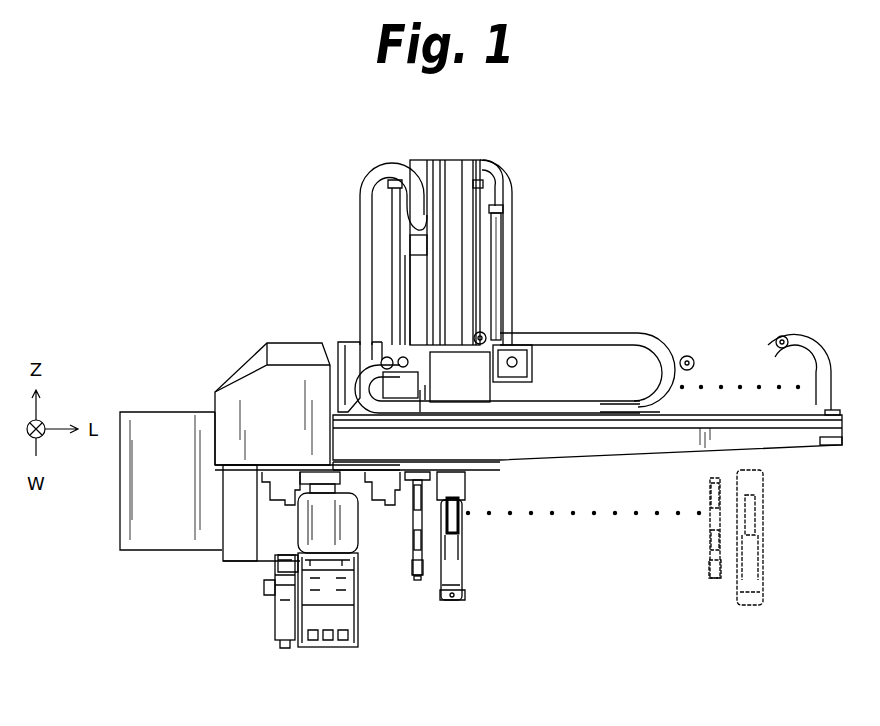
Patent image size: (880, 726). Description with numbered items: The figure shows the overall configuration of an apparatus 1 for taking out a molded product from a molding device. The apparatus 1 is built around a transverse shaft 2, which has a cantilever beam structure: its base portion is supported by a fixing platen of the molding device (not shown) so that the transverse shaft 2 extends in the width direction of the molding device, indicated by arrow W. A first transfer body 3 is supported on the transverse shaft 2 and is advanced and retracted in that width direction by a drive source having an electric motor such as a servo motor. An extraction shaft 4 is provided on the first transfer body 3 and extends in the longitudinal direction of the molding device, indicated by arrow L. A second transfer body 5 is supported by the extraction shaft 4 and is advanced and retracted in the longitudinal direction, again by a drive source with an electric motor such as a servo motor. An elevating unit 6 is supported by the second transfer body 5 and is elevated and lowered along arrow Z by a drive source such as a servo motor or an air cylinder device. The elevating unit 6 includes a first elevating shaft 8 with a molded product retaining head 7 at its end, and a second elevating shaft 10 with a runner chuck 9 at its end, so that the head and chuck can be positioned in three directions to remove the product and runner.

The apparatus for taking out a molded product 1 is at (630, 175).
The transverse shaft 2 is at (360, 530).
The first transfer body 3 is at (253, 386).
The extraction shaft 4 is at (578, 442).
The second transfer body 5 is at (470, 382).
The elevating unit 6 is at (506, 267).
The molded product retaining head 7 is at (453, 602).
The first elevating shaft 8 is at (456, 548).
The runner chuck 9 is at (419, 583).
The second elevating shaft 10 is at (413, 492).